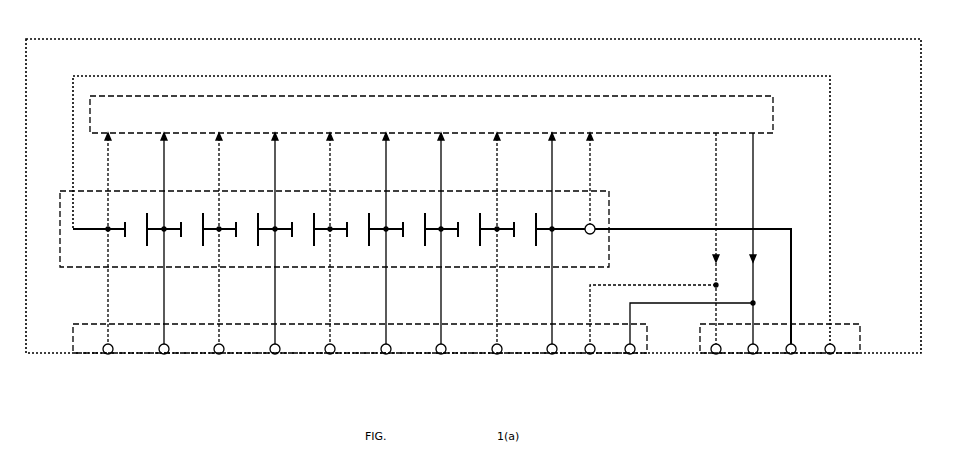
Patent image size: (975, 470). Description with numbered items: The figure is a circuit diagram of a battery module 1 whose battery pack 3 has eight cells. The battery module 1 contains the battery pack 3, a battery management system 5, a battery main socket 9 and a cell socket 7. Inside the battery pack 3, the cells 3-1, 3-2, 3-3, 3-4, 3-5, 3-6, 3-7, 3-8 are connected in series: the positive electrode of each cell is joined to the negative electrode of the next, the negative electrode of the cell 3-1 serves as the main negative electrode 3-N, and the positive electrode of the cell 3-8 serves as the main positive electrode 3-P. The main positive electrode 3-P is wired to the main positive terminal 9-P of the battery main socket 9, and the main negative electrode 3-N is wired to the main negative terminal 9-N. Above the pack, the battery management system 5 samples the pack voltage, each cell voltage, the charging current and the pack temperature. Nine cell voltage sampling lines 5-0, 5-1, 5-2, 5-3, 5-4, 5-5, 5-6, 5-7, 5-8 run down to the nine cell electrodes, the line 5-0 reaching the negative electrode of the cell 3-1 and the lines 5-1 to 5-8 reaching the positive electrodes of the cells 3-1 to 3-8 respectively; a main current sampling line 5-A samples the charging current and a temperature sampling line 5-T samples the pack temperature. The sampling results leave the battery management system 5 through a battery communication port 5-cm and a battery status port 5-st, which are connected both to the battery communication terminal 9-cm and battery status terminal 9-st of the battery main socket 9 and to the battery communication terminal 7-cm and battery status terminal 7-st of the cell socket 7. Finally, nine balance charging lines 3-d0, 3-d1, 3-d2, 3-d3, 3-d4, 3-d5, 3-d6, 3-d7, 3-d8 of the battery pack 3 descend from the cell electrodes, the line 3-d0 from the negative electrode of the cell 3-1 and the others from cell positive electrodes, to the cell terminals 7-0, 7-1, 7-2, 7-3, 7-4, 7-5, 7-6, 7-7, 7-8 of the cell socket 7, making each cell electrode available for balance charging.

The battery module 1 is at (27, 41).
The battery management system 5 is at (90, 98).
The temperature sampling line 5-T is at (808, 115).
The cell voltage sampling line 5-0 is at (98, 181).
The cell voltage sampling line 5-1 is at (154, 181).
The cell voltage sampling line 5-2 is at (209, 181).
The cell voltage sampling line 5-3 is at (265, 181).
The cell voltage sampling line 5-4 is at (320, 181).
The cell voltage sampling line 5-5 is at (376, 181).
The cell voltage sampling line 5-6 is at (431, 181).
The cell voltage sampling line 5-7 is at (487, 181).
The cell voltage sampling line 5-8 is at (542, 181).
The main current sampling line 5-A is at (580, 178).
The battery status port 5-st is at (727, 238).
The battery communication port 5-cm is at (767, 238).
The battery pack 3 is at (60, 192).
The main negative electrode 3-N is at (99, 223).
The cell 3-1 is at (137, 221).
The cell 3-2 is at (192, 221).
The cell 3-3 is at (248, 221).
The cell 3-4 is at (303, 221).
The cell 3-5 is at (359, 221).
The cell 3-6 is at (414, 221).
The cell 3-7 is at (470, 221).
The cell 3-8 is at (525, 221).
The main positive electrode 3-P is at (671, 279).
The balance charging line 3-d0 is at (94, 286).
The balance charging line 3-d1 is at (150, 286).
The balance charging line 3-d2 is at (205, 286).
The balance charging line 3-d3 is at (261, 286).
The balance charging line 3-d4 is at (316, 286).
The balance charging line 3-d5 is at (372, 286).
The balance charging line 3-d6 is at (427, 286).
The balance charging line 3-d7 is at (483, 286).
The balance charging line 3-d8 is at (538, 286).
The cell socket 7 is at (73, 325).
The cell terminal 7-0 is at (100, 340).
The cell terminal 7-1 is at (156, 340).
The cell terminal 7-2 is at (211, 340).
The cell terminal 7-3 is at (267, 340).
The cell terminal 7-4 is at (322, 340).
The cell terminal 7-5 is at (378, 340).
The cell terminal 7-6 is at (433, 340).
The cell terminal 7-7 is at (489, 340).
The cell terminal 7-8 is at (544, 340).
The battery status terminal 7-st is at (641, 319).
The battery communication terminal 7-cm is at (677, 328).
The battery main socket 9 is at (700, 325).
The battery status terminal 9-st is at (726, 340).
The battery communication terminal 9-cm is at (766, 340).
The main positive terminal 9-P is at (799, 340).
The main negative terminal 9-N is at (838, 340).